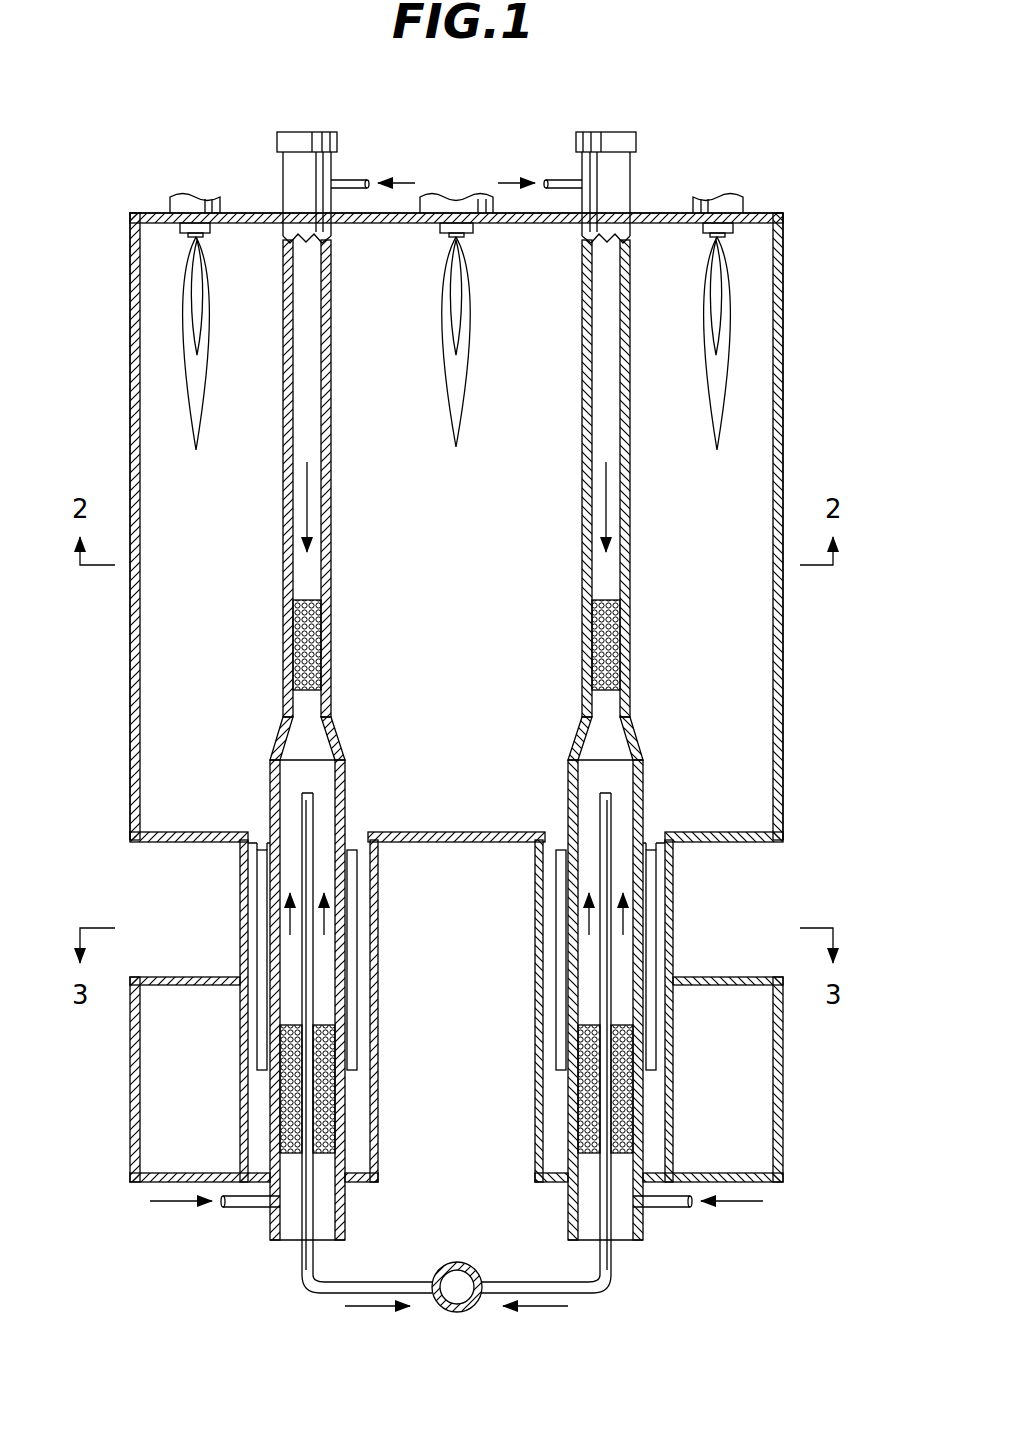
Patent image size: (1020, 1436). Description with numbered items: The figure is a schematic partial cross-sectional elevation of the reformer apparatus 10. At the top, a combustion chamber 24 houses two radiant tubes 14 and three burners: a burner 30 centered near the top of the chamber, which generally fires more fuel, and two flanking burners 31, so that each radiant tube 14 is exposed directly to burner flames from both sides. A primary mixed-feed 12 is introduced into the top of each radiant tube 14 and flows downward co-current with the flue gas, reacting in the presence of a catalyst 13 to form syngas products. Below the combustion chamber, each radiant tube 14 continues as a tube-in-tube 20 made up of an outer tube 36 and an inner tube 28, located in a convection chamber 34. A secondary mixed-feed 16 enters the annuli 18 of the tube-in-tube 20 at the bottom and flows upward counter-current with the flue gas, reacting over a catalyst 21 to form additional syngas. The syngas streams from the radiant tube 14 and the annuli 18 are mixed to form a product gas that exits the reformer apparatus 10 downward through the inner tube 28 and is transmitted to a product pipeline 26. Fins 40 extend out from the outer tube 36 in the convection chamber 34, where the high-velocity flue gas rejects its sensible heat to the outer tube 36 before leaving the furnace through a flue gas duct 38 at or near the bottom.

The reformer apparatus 10 is at (84, 362).
The primary mixed-feed 12 is at (398, 181).
The catalyst 13 is at (313, 633).
The radiant tube 14 is at (283, 177).
The secondary mixed-feed 16 is at (178, 1203).
The annuli 18 is at (323, 795).
The tube-in-tube 20 is at (291, 1256).
The catalyst 21 is at (333, 1135).
The combustion chamber 24 is at (748, 460).
The product pipeline 26 is at (450, 1313).
The inner tube 28 is at (302, 808).
The burner 30 is at (458, 205).
The burner 31 is at (172, 207).
The convection chamber 34 is at (258, 843).
The outer tube 36 is at (345, 1210).
The flue gas duct 38 is at (131, 1075).
The fins 40 is at (262, 915).